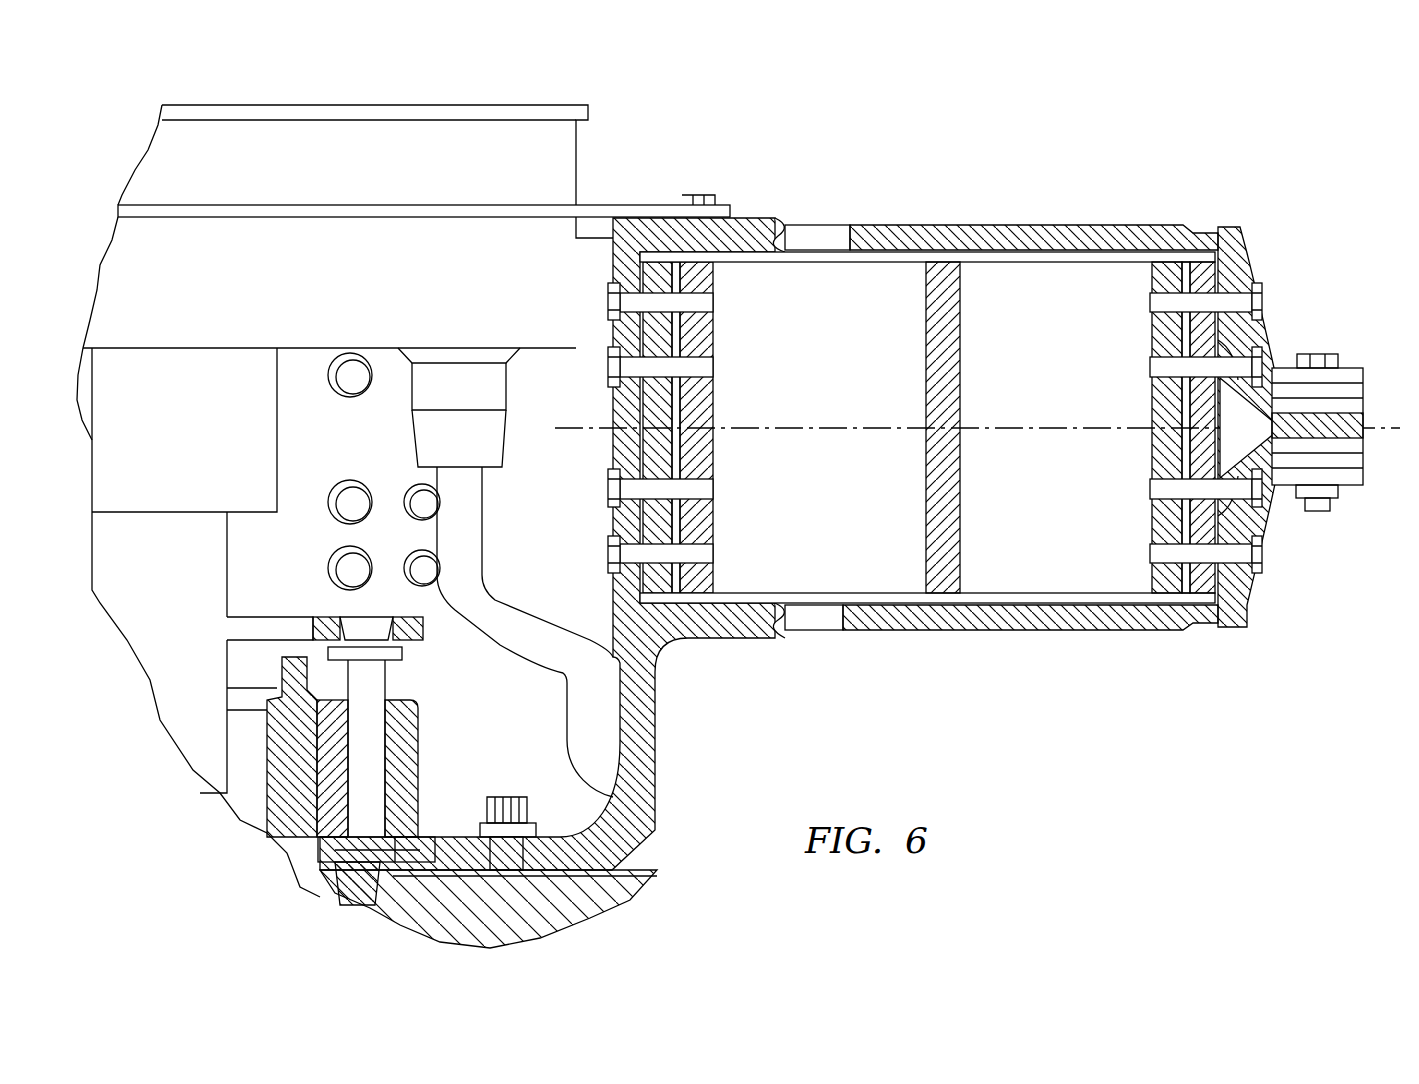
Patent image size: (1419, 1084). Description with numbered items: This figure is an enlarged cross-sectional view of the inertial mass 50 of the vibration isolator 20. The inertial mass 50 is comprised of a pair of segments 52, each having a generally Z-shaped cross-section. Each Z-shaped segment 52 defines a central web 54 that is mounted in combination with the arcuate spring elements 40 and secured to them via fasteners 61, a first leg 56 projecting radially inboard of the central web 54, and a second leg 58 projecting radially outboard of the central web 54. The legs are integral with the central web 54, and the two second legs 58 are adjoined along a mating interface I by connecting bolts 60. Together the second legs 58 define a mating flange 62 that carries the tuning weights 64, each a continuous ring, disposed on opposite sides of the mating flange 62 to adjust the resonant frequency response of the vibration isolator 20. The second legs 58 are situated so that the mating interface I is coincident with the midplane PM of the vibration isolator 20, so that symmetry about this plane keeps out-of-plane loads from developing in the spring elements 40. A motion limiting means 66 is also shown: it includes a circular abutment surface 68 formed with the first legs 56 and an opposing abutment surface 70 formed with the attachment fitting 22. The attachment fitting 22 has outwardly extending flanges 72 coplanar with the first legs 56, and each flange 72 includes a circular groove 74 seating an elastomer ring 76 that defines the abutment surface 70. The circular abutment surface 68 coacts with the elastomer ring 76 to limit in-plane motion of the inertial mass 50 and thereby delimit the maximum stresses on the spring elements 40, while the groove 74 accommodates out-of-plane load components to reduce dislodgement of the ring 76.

The vibration isolator 20 is at (703, 136).
The attachment fitting 22 is at (628, 247).
The arcuate spring elements 40 is at (950, 497).
The inertial mass 50 is at (1331, 379).
The Z-shaped segments 52 is at (1192, 430).
The central web 54 is at (1226, 310).
The first leg 56 is at (1105, 232).
The second leg 58 is at (1251, 429).
The connecting bolts 60 is at (1318, 355).
The fasteners 61 is at (1263, 300).
The mating flange 62 is at (1360, 441).
The tuning weight 64 is at (1355, 385).
The motion limiting means 66 is at (994, 428).
The circular abutment surface 68 is at (1025, 427).
The opposing abutment surface 70 is at (793, 223).
The flange 72 is at (745, 235).
The circular groove 74 is at (784, 250).
The elastomer ring 76 is at (780, 218).
The mating interface I is at (1175, 437).
The midplane PM is at (1063, 420).